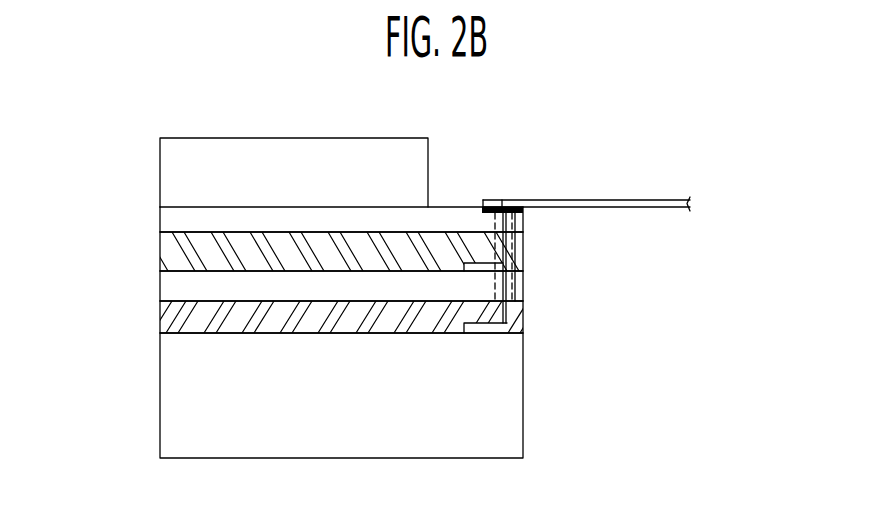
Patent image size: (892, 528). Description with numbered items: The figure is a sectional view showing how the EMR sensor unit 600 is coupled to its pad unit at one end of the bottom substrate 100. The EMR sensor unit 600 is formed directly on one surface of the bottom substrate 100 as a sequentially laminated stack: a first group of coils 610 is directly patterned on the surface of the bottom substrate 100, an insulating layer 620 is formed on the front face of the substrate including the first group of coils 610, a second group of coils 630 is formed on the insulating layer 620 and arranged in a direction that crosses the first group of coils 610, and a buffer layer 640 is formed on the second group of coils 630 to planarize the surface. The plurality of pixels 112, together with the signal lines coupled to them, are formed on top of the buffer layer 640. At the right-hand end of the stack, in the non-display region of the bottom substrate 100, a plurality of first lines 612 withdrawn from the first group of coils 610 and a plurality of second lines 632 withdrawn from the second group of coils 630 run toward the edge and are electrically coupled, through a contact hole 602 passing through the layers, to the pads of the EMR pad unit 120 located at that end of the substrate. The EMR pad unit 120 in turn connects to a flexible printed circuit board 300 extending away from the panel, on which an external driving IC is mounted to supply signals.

The bottom substrate 100 is at (162, 390).
The pixels 112 is at (162, 172).
The EMR sensor unit 600 is at (284, 270).
The first group of coils 610 is at (311, 317).
The insulating layer 620 is at (162, 285).
The second group of coils 630 is at (162, 250).
The buffer layer 640 is at (162, 218).
The EMR pad unit 120 is at (502, 200).
The flexible printed circuit board 300 is at (645, 200).
The second lines 632 is at (505, 247).
The contact hole 602 is at (515, 283).
The first lines 612 is at (485, 324).